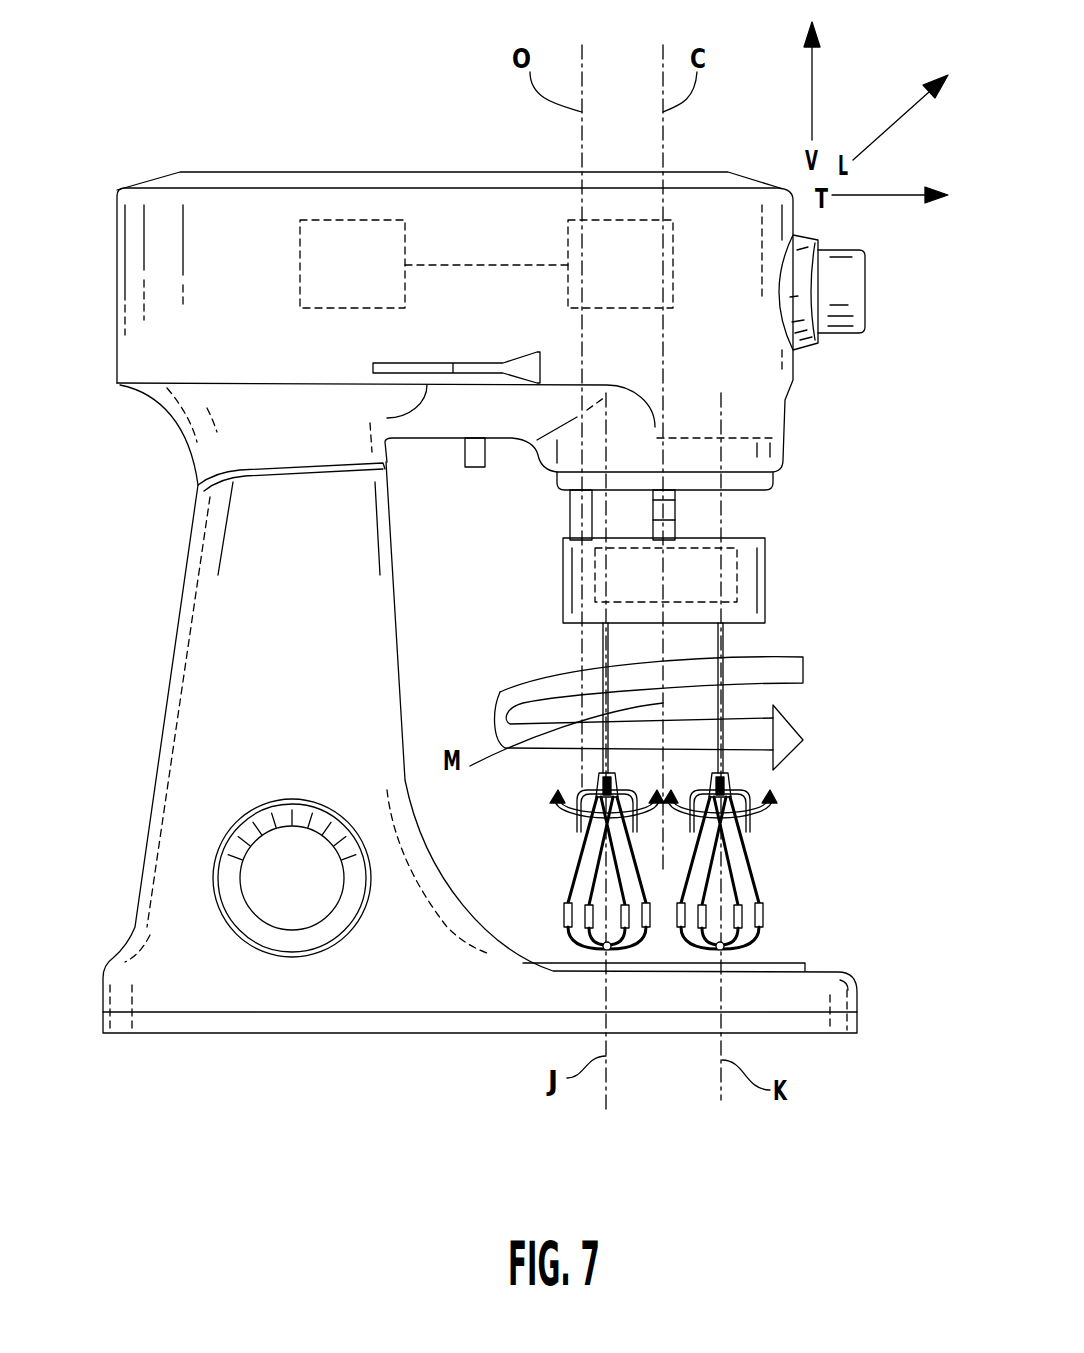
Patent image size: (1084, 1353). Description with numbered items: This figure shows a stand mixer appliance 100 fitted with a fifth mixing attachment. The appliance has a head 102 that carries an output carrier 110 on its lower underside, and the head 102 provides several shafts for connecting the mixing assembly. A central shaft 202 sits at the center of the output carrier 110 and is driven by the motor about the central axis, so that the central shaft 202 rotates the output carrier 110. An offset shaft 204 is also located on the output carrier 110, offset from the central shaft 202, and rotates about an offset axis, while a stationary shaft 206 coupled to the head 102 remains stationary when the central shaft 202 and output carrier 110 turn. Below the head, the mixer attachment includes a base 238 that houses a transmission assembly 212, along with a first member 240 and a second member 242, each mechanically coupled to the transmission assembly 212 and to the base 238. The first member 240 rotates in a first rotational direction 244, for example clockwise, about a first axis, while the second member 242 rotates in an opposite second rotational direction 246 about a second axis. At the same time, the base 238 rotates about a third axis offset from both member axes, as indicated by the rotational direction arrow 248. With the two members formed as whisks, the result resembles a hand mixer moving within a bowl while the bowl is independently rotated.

The stand mixer appliance 100 is at (163, 105).
The head 102 is at (302, 172).
The output carrier 110 is at (775, 481).
The central shaft 202 is at (675, 517).
The offset shaft 204 is at (568, 521).
The stationary shaft 206 is at (458, 469).
The transmission assembly 212 is at (737, 563).
The base 238 is at (765, 575).
The first member 240 is at (572, 872).
The second member 242 is at (725, 643).
The first rotational direction 244 is at (568, 825).
The second rotational direction 246 is at (757, 828).
The rotational direction arrow 248 is at (778, 720).